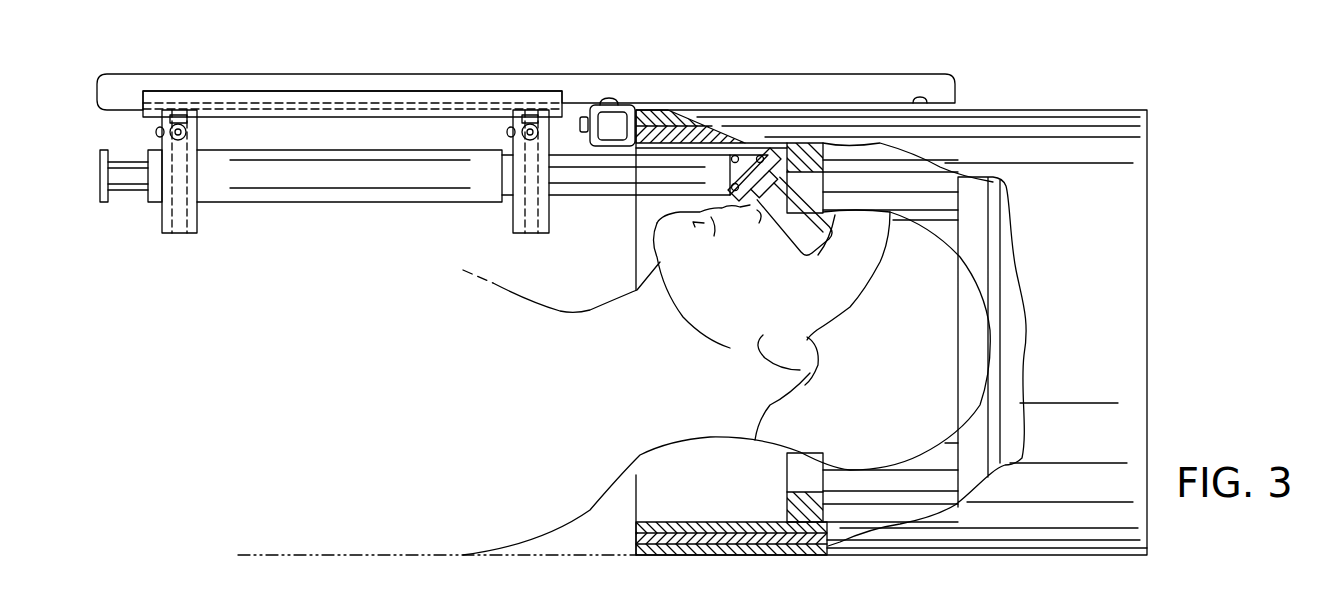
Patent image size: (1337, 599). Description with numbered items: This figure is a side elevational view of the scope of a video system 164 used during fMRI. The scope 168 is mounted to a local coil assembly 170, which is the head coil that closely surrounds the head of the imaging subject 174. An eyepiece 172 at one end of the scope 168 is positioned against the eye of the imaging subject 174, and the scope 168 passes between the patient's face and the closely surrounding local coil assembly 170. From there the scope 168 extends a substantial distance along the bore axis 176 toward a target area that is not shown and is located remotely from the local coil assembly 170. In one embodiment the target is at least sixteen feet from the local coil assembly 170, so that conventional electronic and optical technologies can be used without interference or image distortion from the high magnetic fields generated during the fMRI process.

The video system 164 is at (900, 50).
The scope 168 is at (328, 205).
The local coil assembly 170 is at (1033, 105).
The eyepiece 172 is at (787, 238).
The imaging subject 174 is at (443, 396).
The bore axis 176 is at (355, 266).